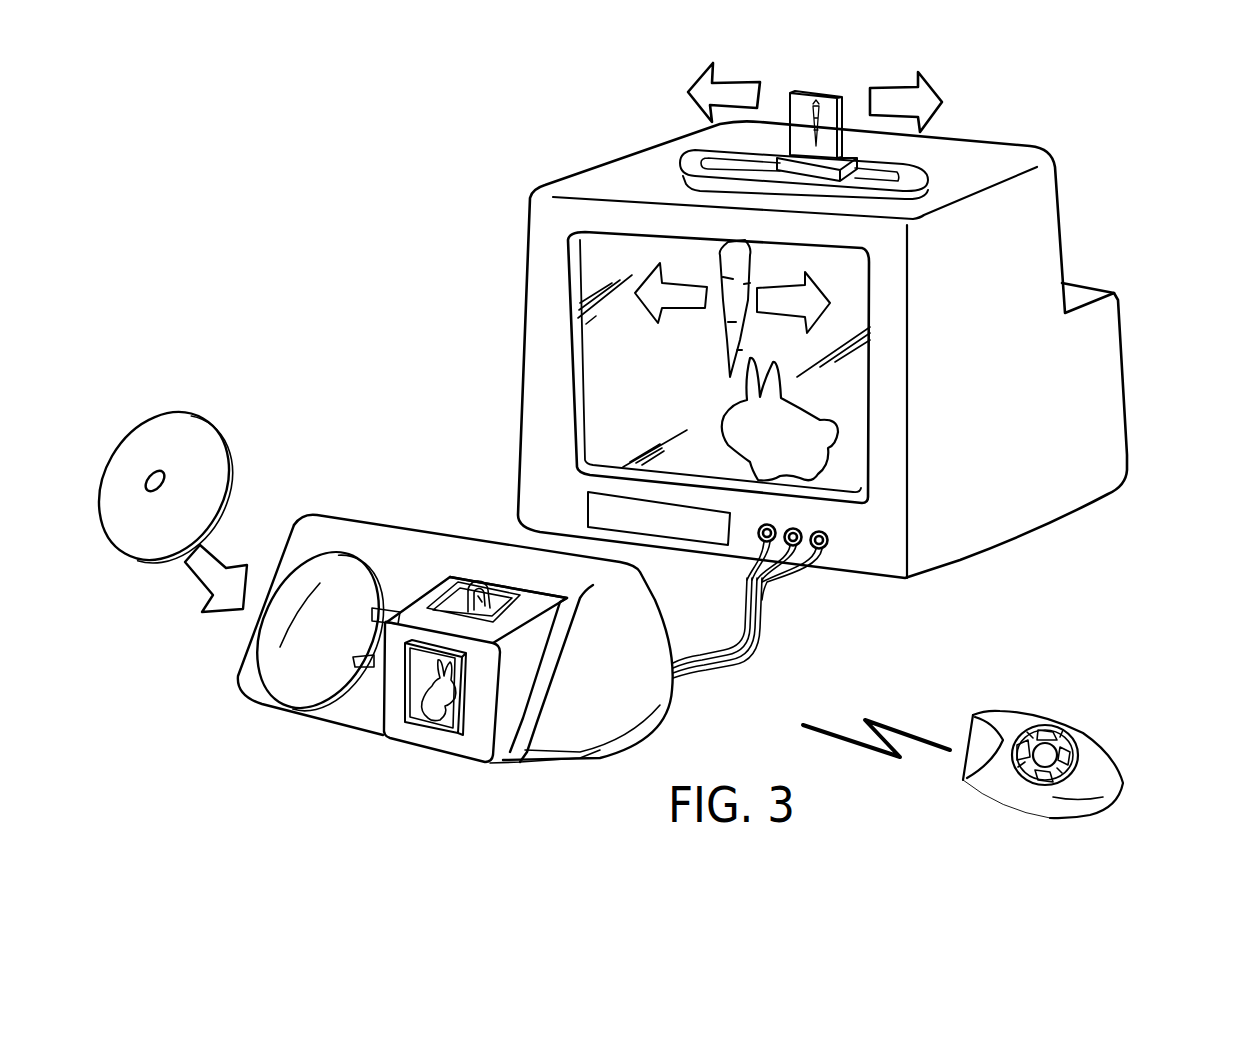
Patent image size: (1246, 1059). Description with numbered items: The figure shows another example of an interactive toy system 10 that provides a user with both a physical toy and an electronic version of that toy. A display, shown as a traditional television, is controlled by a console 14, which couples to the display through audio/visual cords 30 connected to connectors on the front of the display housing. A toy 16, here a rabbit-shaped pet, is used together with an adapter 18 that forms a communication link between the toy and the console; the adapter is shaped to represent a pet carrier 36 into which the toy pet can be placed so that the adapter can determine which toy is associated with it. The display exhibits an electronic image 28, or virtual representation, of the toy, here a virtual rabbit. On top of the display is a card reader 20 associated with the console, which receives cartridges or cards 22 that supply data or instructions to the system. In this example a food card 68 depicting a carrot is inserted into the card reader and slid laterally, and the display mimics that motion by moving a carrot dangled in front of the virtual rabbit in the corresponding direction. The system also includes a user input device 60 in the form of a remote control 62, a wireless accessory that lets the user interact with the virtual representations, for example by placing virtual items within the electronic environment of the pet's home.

The interactive toy system 10 is at (312, 82).
The console 14 is at (373, 608).
The toy 16 is at (406, 724).
The adapter 18 is at (524, 724).
The card reader 20 is at (822, 320).
The cartridges or cards 22 is at (805, 103).
The electronic image 28 is at (852, 419).
The audio/visual cords 30 is at (776, 648).
The pet carrier 36 is at (513, 763).
The user input device 60 is at (1012, 741).
The remote control 62 is at (1073, 737).
The food card 68 is at (824, 130).